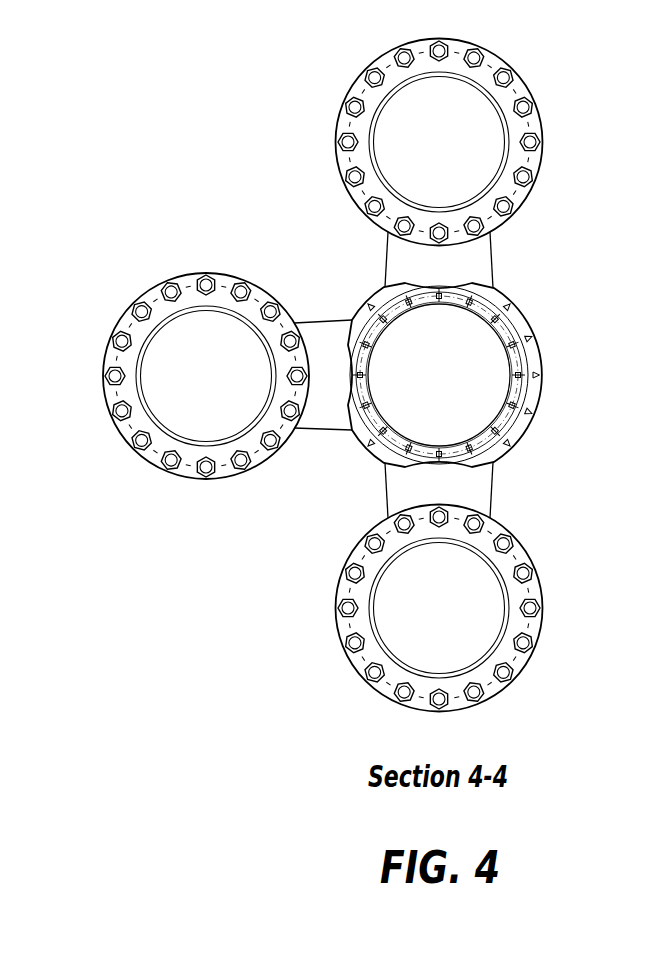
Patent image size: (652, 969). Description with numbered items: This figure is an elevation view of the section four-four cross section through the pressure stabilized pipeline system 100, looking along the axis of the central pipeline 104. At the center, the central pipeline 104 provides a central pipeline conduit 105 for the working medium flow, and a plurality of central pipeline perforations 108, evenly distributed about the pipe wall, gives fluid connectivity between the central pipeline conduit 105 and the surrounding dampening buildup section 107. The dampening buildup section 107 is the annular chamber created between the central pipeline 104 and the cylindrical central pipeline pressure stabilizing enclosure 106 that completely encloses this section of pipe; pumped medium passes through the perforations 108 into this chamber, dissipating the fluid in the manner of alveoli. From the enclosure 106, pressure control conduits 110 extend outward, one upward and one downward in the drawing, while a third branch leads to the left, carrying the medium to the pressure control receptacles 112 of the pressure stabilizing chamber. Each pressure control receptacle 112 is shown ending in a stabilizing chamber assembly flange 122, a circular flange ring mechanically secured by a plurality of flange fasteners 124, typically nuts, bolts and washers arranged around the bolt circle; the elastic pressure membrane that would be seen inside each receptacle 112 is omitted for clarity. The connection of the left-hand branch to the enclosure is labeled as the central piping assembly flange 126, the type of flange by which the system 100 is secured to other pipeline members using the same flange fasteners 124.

The pressure stabilized pipeline system 100 is at (592, 530).
The central pipeline 104 is at (533, 348).
The central pipeline conduit 105 is at (468, 330).
The cylindrical central pipeline pressure stabilizing enclosure 106 is at (532, 393).
The dampening buildup section 107 is at (527, 417).
The central pipeline perforations 108 is at (370, 345).
The pressure control conduits 110 is at (412, 268).
The pressure control receptacle 112 is at (423, 137).
The stabilizing chamber assembly flange 122 is at (487, 65).
The flange fasteners 124 is at (543, 143).
The central piping assembly flange 126 is at (358, 440).